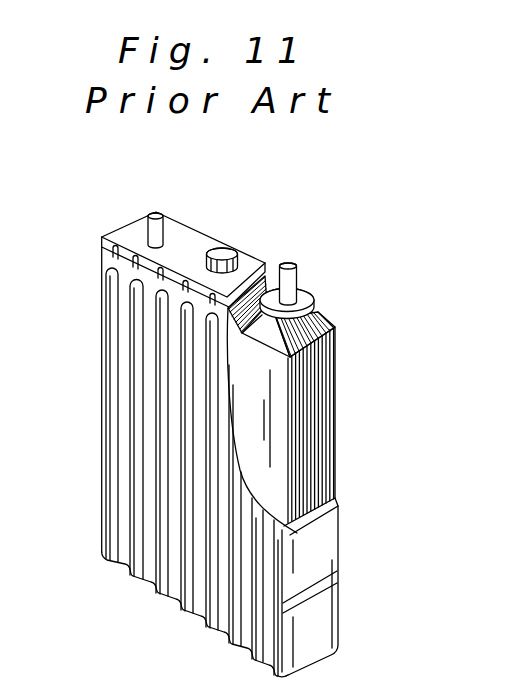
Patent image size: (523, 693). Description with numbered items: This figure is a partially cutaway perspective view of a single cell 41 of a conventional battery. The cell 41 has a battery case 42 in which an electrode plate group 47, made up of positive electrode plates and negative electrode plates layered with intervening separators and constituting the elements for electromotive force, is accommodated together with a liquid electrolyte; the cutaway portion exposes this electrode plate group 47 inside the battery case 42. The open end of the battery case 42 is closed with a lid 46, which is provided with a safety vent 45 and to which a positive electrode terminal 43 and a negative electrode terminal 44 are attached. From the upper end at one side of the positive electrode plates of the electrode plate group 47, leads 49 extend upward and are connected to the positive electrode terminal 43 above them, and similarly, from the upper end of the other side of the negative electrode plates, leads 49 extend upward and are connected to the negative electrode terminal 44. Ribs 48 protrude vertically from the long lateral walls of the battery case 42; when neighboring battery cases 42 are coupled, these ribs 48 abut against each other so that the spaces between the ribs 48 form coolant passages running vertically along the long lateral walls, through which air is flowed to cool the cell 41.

The cell 41 is at (102, 311).
The battery case 42 is at (323, 528).
The positive electrode terminal 43 is at (156, 214).
The negative electrode terminal 44 is at (288, 266).
The safety vent 45 is at (221, 251).
The lid 46 is at (183, 253).
The electrode plate group 47 is at (318, 375).
The ribs 48 is at (160, 453).
The leads 49 is at (275, 335).